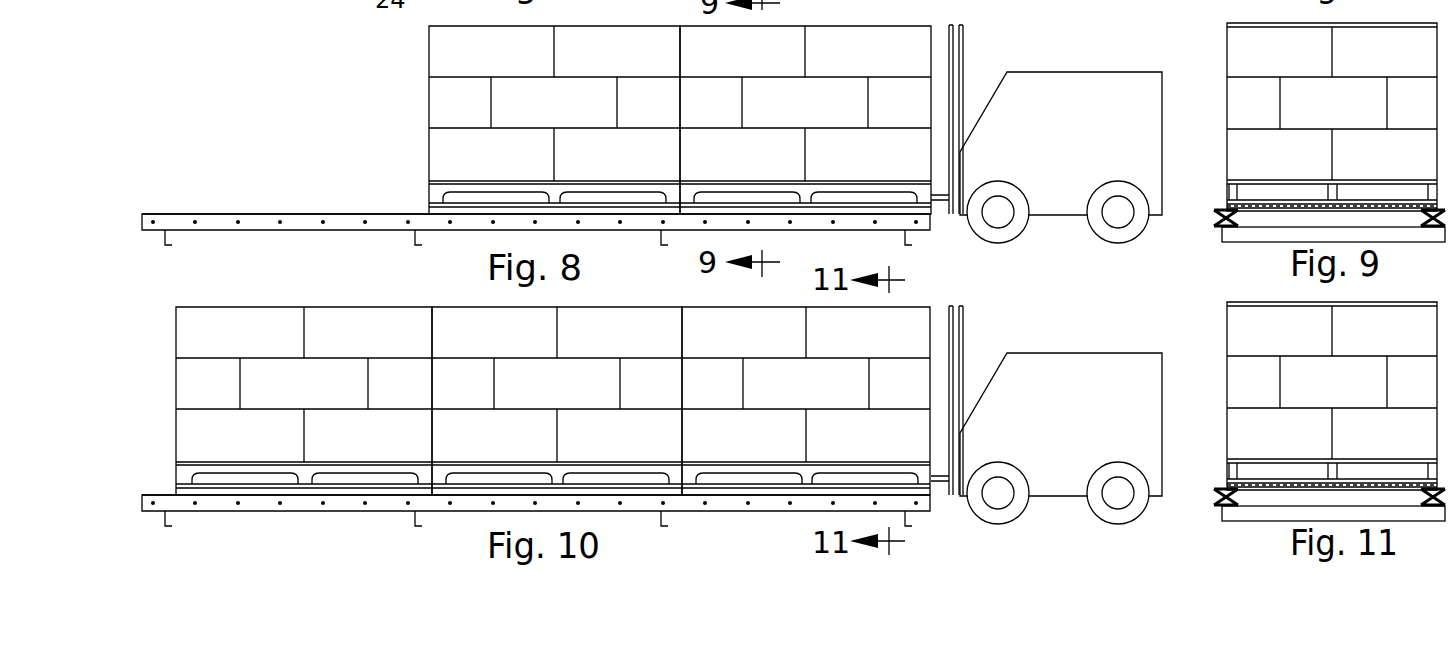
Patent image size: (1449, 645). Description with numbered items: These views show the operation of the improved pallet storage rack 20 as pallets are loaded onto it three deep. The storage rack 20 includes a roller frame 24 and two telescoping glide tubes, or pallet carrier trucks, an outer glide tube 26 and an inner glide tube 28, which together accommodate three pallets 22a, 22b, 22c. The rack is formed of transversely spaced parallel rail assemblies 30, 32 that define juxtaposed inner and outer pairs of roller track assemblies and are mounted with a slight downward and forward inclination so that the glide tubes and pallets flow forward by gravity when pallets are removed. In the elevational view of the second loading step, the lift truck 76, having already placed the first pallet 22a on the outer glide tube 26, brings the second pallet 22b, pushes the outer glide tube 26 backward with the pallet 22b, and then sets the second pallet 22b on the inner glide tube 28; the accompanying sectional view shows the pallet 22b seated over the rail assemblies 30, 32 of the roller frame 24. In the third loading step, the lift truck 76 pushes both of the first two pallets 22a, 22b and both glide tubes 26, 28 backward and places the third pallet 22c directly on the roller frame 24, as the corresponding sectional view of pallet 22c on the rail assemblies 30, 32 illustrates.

In FIG. 8, the pallet storage rack 20 is at (275, 124).
In FIG. 10, the pallet storage rack 20 is at (165, 399).
In FIG. 8, the first pallet 22a is at (592, 25).
In FIG. 10, the first pallet 22a is at (342, 305).
In FIG. 8, the second pallet 22b is at (918, 26).
In FIG. 9, the second pallet 22b is at (1227, 68).
In FIG. 10, the second pallet 22b is at (595, 307).
In FIG. 10, the third pallet 22c is at (915, 307).
In FIG. 11, the third pallet 22c is at (1227, 347).
In FIG. 8, the roller frame 24 is at (267, 233).
In FIG. 9, the roller frame 24 is at (1222, 216).
In FIG. 10, the roller frame 24 is at (152, 513).
In FIG. 11, the roller frame 24 is at (1222, 495).
In FIG. 8, the outer glide tube 26 is at (474, 205).
In FIG. 10, the outer glide tube 26 is at (223, 486).
In FIG. 8, the inner glide tube 28 is at (724, 205).
In FIG. 9, the inner glide tube 28 is at (1241, 200).
In FIG. 10, the inner glide tube 28 is at (479, 486).
In FIG. 11, the inner glide tube 28 is at (1332, 475).
In FIG. 9, the rail assembly 30 is at (1245, 220).
In FIG. 11, the rail assembly 30 is at (1245, 499).
In FIG. 8, the rail assembly 32 is at (268, 214).
In FIG. 9, the rail assembly 32 is at (1423, 220).
In FIG. 10, the rail assembly 32 is at (157, 495).
In FIG. 11, the rail assembly 32 is at (1423, 499).
In FIG. 8, the lift truck 76 is at (1058, 72).
In FIG. 10, the lift truck 76 is at (1058, 352).